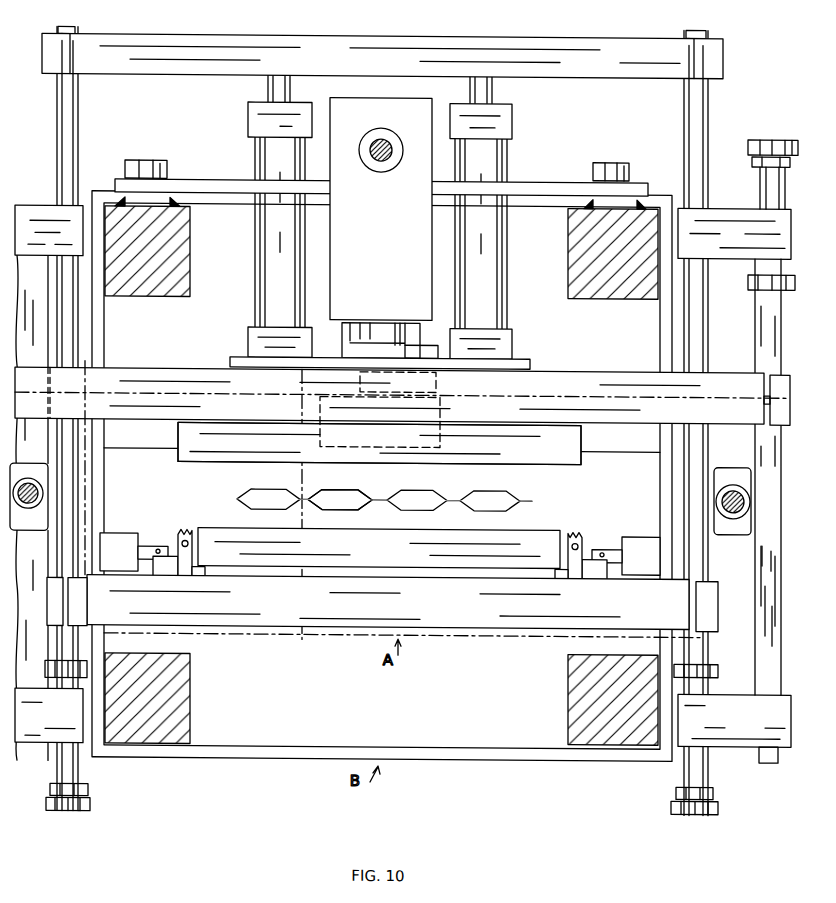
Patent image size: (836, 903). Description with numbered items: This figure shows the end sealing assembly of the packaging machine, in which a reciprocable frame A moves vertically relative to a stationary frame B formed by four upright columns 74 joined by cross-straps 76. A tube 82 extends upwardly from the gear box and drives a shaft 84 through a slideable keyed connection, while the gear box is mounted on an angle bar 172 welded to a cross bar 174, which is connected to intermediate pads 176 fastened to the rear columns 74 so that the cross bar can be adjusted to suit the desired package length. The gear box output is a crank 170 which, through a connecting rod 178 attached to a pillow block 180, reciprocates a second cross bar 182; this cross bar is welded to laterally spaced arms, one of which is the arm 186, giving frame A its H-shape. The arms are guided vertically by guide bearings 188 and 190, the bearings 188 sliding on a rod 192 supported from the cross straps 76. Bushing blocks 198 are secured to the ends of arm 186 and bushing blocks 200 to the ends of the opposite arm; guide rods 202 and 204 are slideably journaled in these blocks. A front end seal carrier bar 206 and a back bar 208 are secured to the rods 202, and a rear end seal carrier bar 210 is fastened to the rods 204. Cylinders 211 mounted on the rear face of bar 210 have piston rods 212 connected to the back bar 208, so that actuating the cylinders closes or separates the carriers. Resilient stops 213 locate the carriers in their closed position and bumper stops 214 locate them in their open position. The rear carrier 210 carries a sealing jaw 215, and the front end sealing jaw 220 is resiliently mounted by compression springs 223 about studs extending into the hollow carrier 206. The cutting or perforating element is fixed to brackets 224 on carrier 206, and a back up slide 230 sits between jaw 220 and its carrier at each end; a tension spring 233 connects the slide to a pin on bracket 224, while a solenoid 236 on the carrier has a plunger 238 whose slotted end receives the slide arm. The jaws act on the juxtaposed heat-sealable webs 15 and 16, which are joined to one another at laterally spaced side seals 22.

The back bar 208 is at (547, 36).
The piston rods 212 is at (268, 85).
The angle bar 172 is at (388, 97).
The shaft 84 is at (376, 144).
The tube 82 is at (400, 135).
The cross bar 174 is at (528, 180).
The cross-straps 76 is at (510, 190).
The intermediate pads 176 is at (135, 195).
The resilient bumper-like stops 213 is at (782, 136).
The bushing blocks 198 is at (40, 205).
The bushing blocks 200 is at (720, 208).
The air or hydraulic cylinders 211 is at (255, 255).
The upright columns 74 is at (185, 292).
The crank 170 is at (398, 320).
The bumper stops 214 is at (758, 292).
The rear end seal carrier bar 210 is at (150, 372).
The connecting rod 178 is at (436, 379).
The pillow block 180 is at (440, 434).
The sealing jaw 215 is at (518, 459).
The cross bar 182 is at (592, 466).
The guide bearings 188 is at (40, 481).
The rod 192 is at (33, 498).
The guide bearings 190 is at (748, 500).
The side seals 22 is at (237, 497).
The heat-sealable web 15 is at (345, 490).
The heat-sealable web 16 is at (350, 507).
The front end sealing jaw 220 is at (516, 532).
The tension spring 233 is at (180, 533).
The solenoid 236 is at (140, 516).
The solenoid plunger 238 is at (142, 558).
The brackets 224 is at (178, 577).
The back up slide 230 is at (200, 578).
The compression spring 223 is at (275, 583).
The front end seal carrier bar 206 is at (515, 628).
The guide rod 204 is at (763, 572).
The arm 186 is at (36, 688).
The guide rod 202 is at (80, 780).